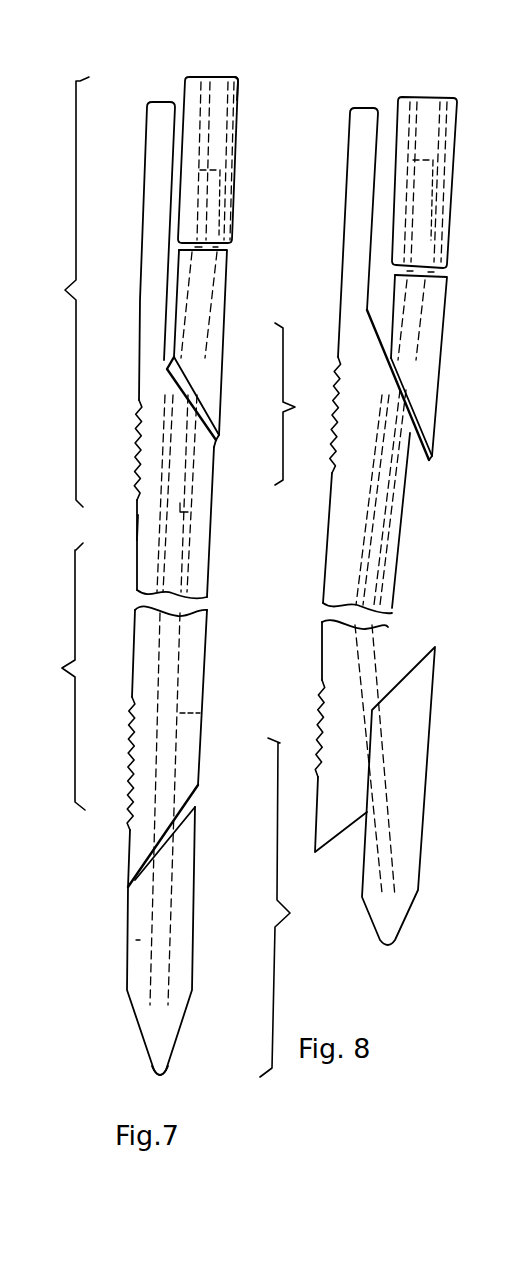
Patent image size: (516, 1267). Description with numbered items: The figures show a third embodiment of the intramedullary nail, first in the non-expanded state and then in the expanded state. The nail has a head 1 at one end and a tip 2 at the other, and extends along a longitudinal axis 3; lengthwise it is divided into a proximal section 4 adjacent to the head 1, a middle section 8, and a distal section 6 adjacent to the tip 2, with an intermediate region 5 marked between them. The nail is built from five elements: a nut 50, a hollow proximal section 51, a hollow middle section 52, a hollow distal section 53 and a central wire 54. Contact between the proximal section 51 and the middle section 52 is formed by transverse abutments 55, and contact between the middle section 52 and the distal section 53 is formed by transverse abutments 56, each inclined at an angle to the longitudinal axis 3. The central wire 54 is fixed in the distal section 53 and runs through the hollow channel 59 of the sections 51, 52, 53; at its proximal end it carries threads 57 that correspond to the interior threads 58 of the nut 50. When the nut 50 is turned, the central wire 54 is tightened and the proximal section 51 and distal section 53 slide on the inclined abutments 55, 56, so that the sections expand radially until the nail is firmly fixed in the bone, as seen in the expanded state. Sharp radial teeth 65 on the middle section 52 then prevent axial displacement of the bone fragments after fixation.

The head 1 is at (234, 77).
The tip 2 is at (162, 1078).
The longitudinal axis 3 is at (214, 78).
The proximal section 4 is at (62, 307).
The intermediate section 5 is at (318, 428).
The distal section 6 is at (310, 931).
The middle section 8 is at (50, 686).
The nut 50 is at (240, 213).
The hollow proximal section 51 is at (235, 276).
The hollow middle section 52 is at (218, 555).
The hollow distal section 53 is at (122, 968).
The central wire 54 is at (180, 510).
The transverse abutments 55 is at (216, 425).
The transverse abutments 56 is at (183, 822).
The threads 57 is at (220, 183).
The interior threads 58 is at (223, 133).
The hollow channel 59 is at (163, 523).
The sharp radial teeth 65 is at (139, 454).